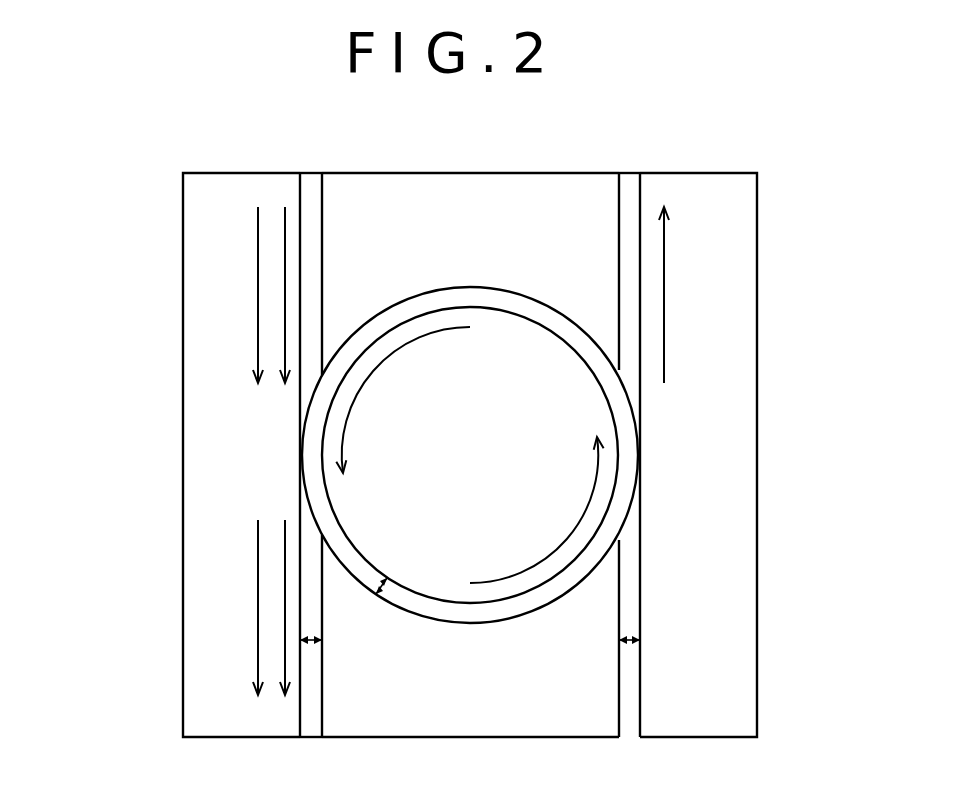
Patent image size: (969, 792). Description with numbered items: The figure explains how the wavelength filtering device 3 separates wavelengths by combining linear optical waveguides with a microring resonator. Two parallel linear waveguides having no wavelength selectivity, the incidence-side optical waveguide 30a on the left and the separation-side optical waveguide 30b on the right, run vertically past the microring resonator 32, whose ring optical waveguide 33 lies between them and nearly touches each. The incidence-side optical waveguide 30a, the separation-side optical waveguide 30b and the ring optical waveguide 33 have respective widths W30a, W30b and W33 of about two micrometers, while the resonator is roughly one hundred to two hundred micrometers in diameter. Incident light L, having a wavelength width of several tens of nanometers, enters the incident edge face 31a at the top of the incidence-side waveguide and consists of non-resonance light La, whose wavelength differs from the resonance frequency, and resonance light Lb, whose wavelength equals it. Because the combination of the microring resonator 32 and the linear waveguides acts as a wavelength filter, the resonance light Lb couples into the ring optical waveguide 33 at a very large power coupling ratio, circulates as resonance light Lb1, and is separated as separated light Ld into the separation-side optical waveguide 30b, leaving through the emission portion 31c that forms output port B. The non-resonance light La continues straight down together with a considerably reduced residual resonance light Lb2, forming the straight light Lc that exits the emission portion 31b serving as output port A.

The wavelength filtering device 3 is at (125, 198).
The incidence-side optical waveguide 30a is at (313, 203).
The separation-side optical waveguide 30b is at (633, 205).
The incident edge face 31a is at (310, 159).
The emission portion 31b is at (311, 755).
The emission portion 31c is at (629, 159).
The microring resonator 32 is at (492, 472).
The ring optical waveguide 33 is at (628, 437).
The incident light L is at (188, 295).
The non-resonance light La is at (258, 237).
The resonance light Lb is at (285, 272).
The resonance light Lb1 is at (592, 500).
The resonance light Lb2 is at (285, 583).
The straight light Lc is at (176, 607).
The separated light Ld is at (664, 310).
The width of ring optical waveguide W33 is at (406, 572).
The width of incidence-side optical waveguide W30a is at (349, 642).
The width of separation-side optical waveguide W30b is at (668, 642).